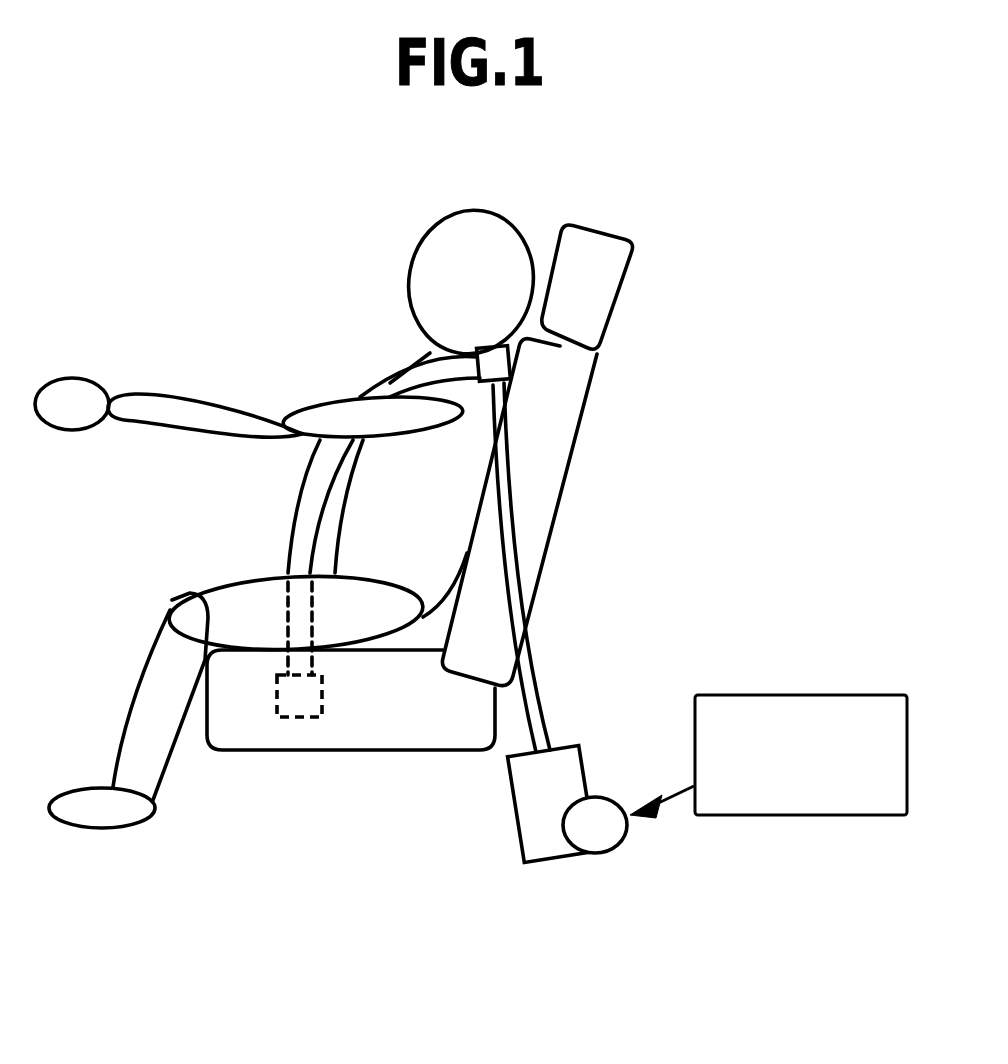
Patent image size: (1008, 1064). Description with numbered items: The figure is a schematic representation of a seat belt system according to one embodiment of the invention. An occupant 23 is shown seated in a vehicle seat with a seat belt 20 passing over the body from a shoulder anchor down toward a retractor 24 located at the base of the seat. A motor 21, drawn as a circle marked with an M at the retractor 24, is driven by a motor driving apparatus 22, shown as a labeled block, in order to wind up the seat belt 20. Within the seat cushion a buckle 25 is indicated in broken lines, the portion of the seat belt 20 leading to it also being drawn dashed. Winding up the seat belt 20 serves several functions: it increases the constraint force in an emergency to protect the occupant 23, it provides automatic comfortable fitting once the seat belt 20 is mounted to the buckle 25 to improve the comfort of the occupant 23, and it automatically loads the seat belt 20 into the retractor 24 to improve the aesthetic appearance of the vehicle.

The seat belt 20 is at (297, 502).
The motor 21 is at (622, 838).
The motor driving apparatus 22 is at (790, 695).
The occupant 23 is at (413, 310).
The retractor 24 is at (523, 808).
The buckle 25 is at (295, 718).